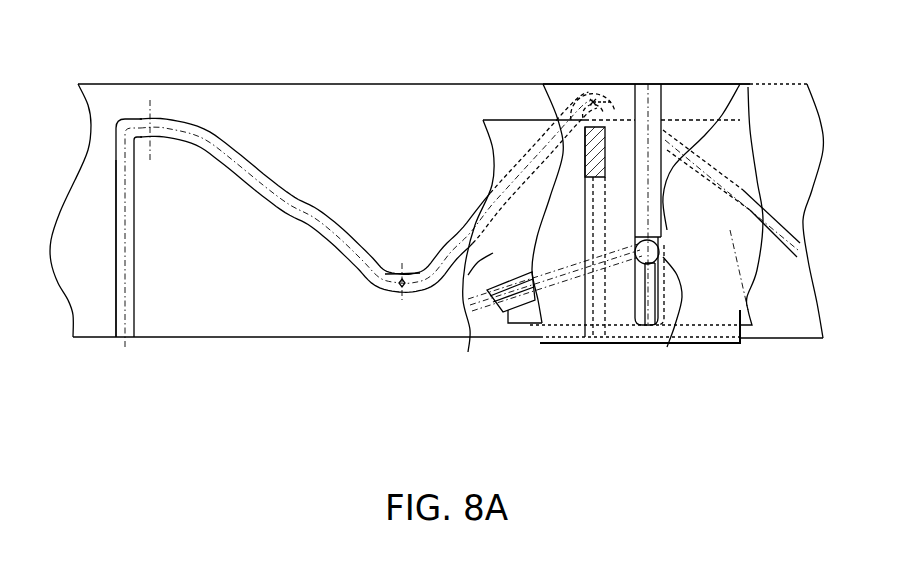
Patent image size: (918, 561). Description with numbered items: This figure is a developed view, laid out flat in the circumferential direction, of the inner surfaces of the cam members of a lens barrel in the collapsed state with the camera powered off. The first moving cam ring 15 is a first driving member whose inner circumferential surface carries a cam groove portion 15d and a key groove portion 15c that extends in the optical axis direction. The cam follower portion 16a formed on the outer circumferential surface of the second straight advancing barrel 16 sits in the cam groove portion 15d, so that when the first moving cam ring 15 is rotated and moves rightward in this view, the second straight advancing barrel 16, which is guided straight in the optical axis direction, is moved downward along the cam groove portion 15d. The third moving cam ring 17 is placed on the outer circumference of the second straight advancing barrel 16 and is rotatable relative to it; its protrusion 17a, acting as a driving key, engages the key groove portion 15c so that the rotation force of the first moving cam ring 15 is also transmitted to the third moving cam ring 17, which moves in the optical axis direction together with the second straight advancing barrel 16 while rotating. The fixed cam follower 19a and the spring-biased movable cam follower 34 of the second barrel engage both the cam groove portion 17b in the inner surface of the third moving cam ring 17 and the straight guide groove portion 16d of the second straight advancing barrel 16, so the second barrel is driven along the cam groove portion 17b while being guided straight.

The first moving cam ring 15 is at (290, 297).
The key groove portion 15c is at (120, 295).
The cam groove portion 15d is at (404, 300).
The second straight advancing barrel 16 is at (720, 297).
The cam follower portion 16a is at (593, 102).
The straight guide groove portion 16d is at (740, 84).
The third moving cam ring 17 is at (473, 330).
The protrusion 17a is at (618, 107).
The cam groove portion 17b is at (503, 310).
The fixed cam follower 19a is at (668, 343).
The movable cam follower 34 is at (590, 352).